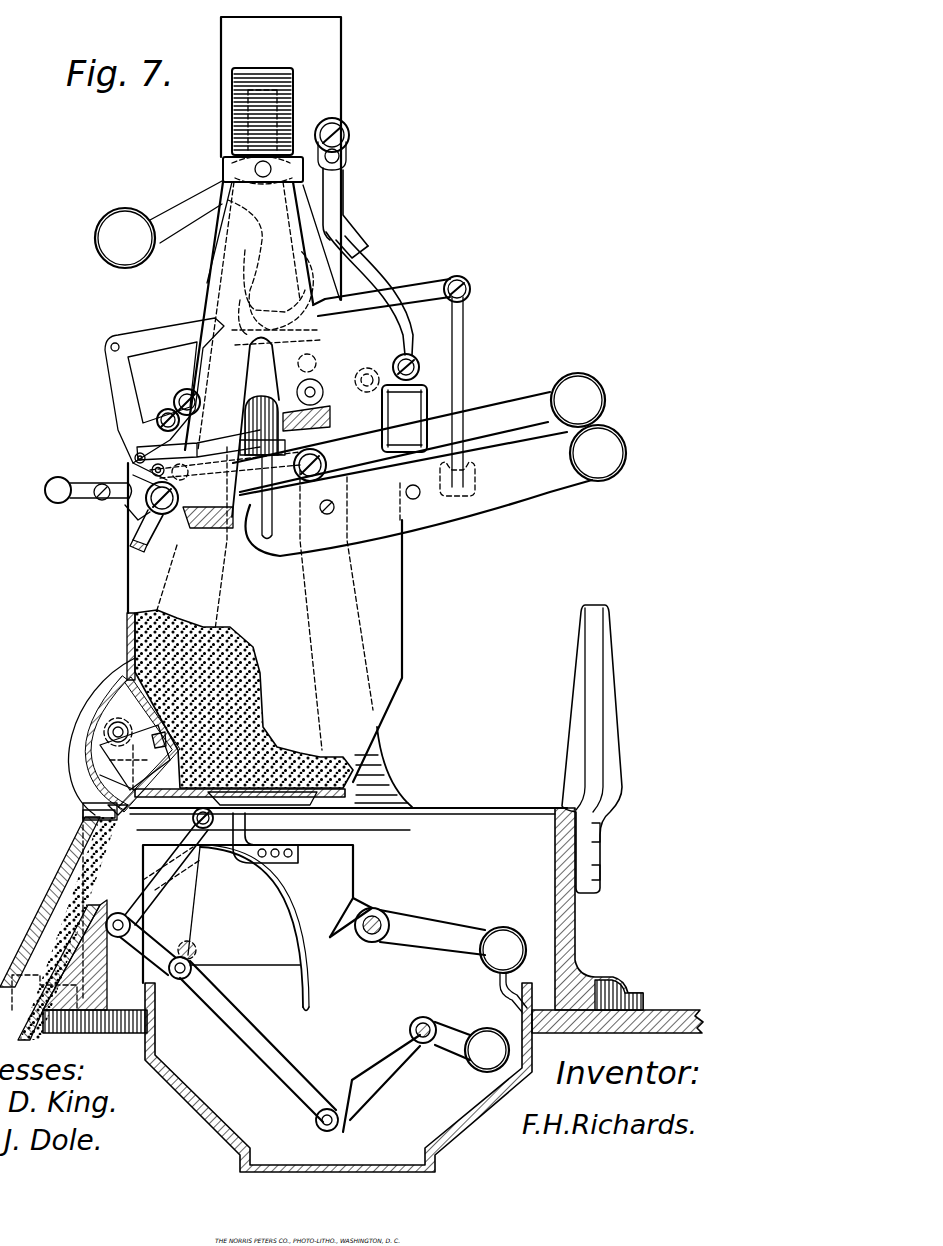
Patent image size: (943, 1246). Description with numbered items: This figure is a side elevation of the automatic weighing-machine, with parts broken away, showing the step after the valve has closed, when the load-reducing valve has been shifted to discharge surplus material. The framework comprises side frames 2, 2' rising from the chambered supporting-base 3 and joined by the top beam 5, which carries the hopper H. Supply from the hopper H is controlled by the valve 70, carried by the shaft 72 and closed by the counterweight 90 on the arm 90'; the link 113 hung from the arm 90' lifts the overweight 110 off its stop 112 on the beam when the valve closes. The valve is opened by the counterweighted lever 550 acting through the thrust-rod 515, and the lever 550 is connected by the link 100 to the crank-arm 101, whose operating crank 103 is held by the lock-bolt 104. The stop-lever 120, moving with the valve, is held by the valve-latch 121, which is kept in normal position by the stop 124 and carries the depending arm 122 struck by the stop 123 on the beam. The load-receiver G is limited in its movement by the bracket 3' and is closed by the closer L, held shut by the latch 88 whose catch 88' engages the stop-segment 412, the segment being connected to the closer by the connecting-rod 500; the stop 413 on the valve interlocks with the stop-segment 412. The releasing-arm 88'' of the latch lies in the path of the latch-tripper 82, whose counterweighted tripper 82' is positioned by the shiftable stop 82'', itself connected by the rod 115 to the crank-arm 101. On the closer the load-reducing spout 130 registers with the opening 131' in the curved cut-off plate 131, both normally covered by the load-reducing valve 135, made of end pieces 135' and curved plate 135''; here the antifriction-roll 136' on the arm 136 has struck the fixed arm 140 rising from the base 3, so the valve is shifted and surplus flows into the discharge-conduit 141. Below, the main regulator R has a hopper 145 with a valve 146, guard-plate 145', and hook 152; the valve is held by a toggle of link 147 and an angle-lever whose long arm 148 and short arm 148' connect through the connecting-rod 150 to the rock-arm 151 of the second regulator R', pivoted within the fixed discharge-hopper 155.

The hopper H is at (341, 47).
The top beam 5 is at (277, 68).
The shaft 72 is at (258, 171).
The valve-closing actuator 90 is at (158, 224).
The arm 90' is at (326, 131).
The link 113 is at (333, 206).
The stop-lever 120 is at (357, 242).
The valve 70 is at (205, 250).
The valve-opening thrust-rod 515 is at (207, 283).
The stop 124 is at (307, 281).
The stop 413 is at (332, 275).
The valve-latch 121 is at (425, 291).
The depending arm 122 is at (460, 348).
The stop 123 is at (476, 480).
The lock-bolt 104 is at (385, 357).
The link 100 is at (265, 365).
The crank-arm 101 is at (313, 370).
The operating crank 103 is at (331, 420).
The overweight 110 is at (392, 437).
The valve-opening actuator 550 is at (490, 412).
The stop 112 is at (420, 498).
The stop-segment 412 is at (148, 340).
The rod 115 is at (157, 450).
The latch-tripper 82 is at (183, 485).
The tripper 82' is at (121, 458).
The stop 82'' is at (113, 443).
The latch 88 is at (88, 482).
The catch 88' is at (121, 527).
The releasing-arm 88'' is at (119, 497).
The connecting-rod 500 is at (140, 532).
The side frame 2 is at (208, 533).
The load-receiver G is at (264, 658).
The closer L is at (244, 699).
The side frame 2' is at (383, 767).
The hook 152 is at (240, 828).
The bracket 3' is at (606, 749).
The supporting-base 3 is at (617, 920).
The valve 146 is at (277, 953).
The guard-plate 145' is at (338, 1001).
The regulator-hopper 145 is at (428, 930).
The main regulator R is at (375, 890).
The link 147 is at (133, 898).
The discharge-conduit 141 is at (72, 884).
The long arm 148 is at (148, 949).
The short arm 148' is at (239, 946).
The discharge-hopper 155 is at (222, 1128).
The connecting-rod 150 is at (282, 1062).
The rock-arm 151 is at (379, 1077).
The second regulator R' is at (426, 1070).
The load-reducing spout 130 is at (90, 723).
The arm 136 is at (127, 722).
The antifriction-roll 136' is at (110, 723).
The cut-off plate 131 is at (77, 732).
The end pieces 135' is at (90, 748).
The load-reducing valve 135 is at (86, 767).
The curved plate 135'' is at (78, 789).
The opening 131' is at (77, 810).
The arm 140 is at (105, 806).